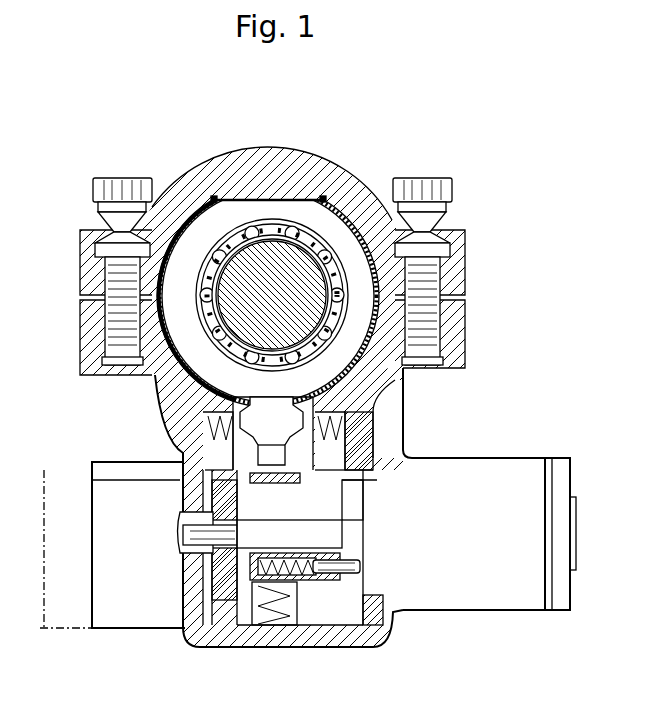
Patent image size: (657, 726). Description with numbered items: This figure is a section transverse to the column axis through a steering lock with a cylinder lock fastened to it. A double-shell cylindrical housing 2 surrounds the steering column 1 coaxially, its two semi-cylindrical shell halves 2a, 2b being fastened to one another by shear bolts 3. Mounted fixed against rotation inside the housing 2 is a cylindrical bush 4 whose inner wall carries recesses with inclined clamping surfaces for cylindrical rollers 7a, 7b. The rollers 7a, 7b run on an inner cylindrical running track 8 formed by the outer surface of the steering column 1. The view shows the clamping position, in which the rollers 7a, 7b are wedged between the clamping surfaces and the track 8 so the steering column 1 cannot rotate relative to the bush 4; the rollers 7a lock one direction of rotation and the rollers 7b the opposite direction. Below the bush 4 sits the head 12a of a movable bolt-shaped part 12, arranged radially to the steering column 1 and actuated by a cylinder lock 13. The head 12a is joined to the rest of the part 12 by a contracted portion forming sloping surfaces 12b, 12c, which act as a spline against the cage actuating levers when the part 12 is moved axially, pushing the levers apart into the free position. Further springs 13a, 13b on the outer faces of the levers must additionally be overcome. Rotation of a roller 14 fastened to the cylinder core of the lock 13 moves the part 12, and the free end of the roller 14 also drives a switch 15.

The steering column 1 is at (303, 258).
The double-shell cylindrical housing 2 is at (312, 397).
The shell half 2a is at (463, 232).
The shell half 2b is at (458, 352).
The shear bolt 3 is at (123, 192).
The cylindrical bush 4 is at (258, 205).
The cylindrical roller 7a is at (214, 340).
The cylindrical roller 7b is at (330, 342).
The inner cylindrical running track 8 is at (212, 198).
The bolt-shaped part 12 is at (377, 470).
The head 12a is at (267, 410).
The sloping surface 12b is at (240, 437).
The sloping surface 12c is at (328, 445).
The cylinder lock 13 is at (478, 592).
The further spring 13a is at (205, 420).
The further spring 13b is at (333, 420).
The roller 14 is at (332, 540).
The switch 15 is at (117, 618).